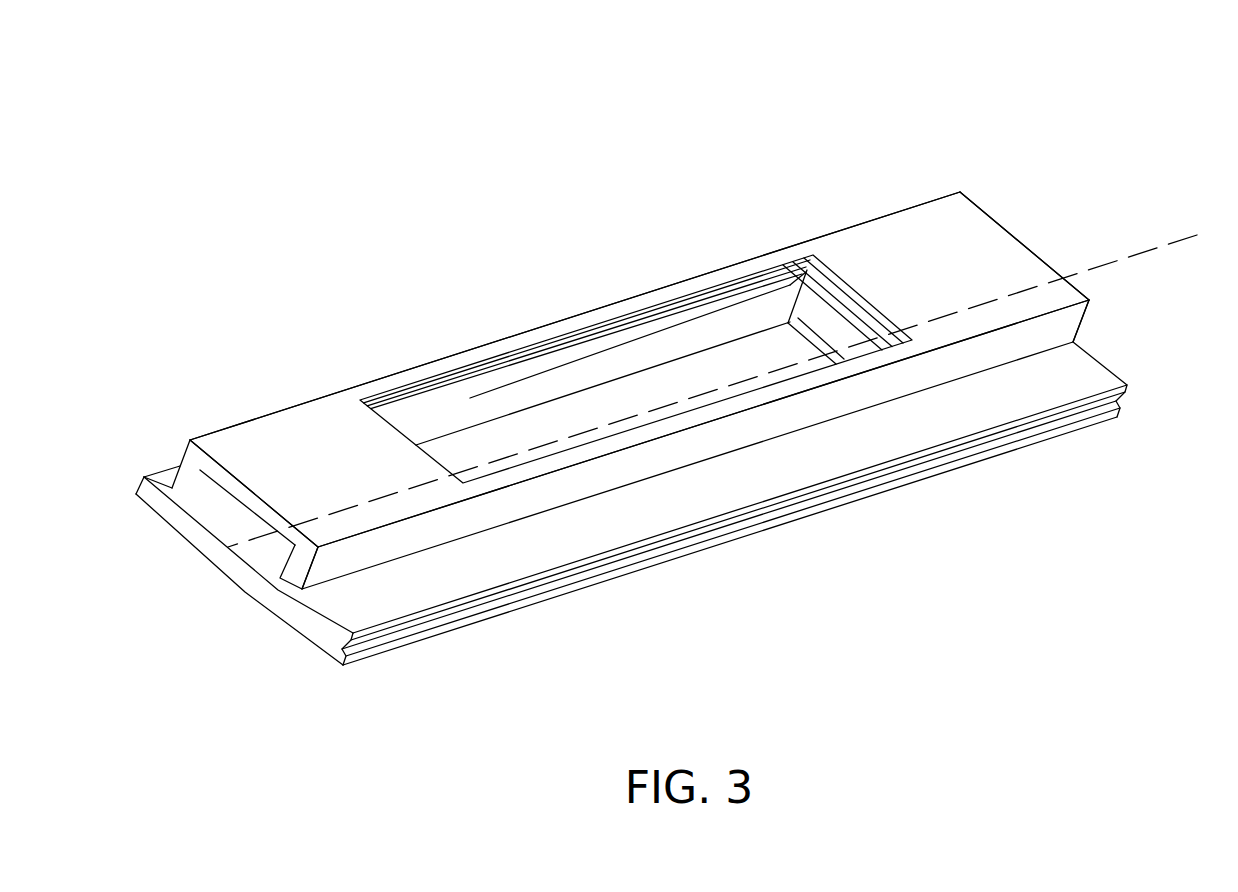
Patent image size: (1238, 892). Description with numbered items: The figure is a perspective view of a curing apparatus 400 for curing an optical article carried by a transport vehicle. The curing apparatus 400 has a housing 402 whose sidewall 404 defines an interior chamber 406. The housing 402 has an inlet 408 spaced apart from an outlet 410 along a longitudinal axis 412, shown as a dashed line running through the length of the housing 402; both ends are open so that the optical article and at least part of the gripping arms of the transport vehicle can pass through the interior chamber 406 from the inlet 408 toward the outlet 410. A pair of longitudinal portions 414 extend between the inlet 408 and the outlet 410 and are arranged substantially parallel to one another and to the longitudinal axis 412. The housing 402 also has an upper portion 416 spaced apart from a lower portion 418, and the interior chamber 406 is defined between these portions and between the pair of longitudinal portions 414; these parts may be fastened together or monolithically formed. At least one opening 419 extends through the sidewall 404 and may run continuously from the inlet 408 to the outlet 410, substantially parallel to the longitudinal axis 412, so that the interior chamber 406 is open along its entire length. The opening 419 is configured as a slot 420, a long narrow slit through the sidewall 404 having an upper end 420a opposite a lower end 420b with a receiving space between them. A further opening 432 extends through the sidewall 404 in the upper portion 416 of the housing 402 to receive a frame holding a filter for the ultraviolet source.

The curing apparatus 400 is at (1004, 136).
The housing 402 is at (1010, 249).
The sidewall 404 is at (183, 463).
The interior chamber 406 is at (263, 542).
The inlet 408 is at (1091, 329).
The outlet 410 is at (223, 513).
The longitudinal axis 412 is at (1190, 232).
The longitudinal portions 414 is at (661, 287).
The upper portion 416 is at (888, 250).
The lower portion 418 is at (367, 665).
The opening 419 is at (620, 560).
The slot 420 is at (517, 591).
The upper end 420a is at (357, 637).
The lower end 420b is at (340, 664).
The opening 432 is at (513, 401).